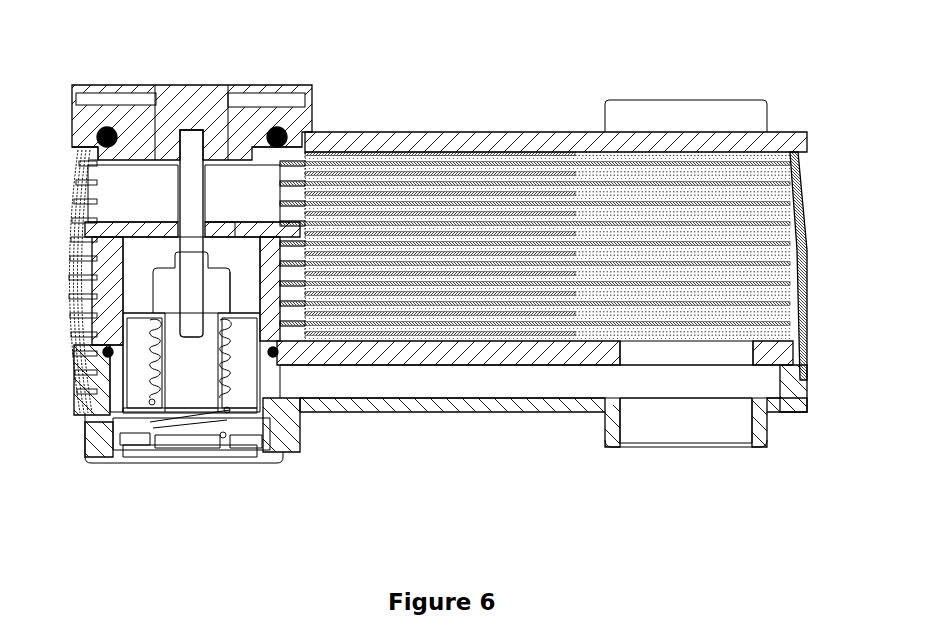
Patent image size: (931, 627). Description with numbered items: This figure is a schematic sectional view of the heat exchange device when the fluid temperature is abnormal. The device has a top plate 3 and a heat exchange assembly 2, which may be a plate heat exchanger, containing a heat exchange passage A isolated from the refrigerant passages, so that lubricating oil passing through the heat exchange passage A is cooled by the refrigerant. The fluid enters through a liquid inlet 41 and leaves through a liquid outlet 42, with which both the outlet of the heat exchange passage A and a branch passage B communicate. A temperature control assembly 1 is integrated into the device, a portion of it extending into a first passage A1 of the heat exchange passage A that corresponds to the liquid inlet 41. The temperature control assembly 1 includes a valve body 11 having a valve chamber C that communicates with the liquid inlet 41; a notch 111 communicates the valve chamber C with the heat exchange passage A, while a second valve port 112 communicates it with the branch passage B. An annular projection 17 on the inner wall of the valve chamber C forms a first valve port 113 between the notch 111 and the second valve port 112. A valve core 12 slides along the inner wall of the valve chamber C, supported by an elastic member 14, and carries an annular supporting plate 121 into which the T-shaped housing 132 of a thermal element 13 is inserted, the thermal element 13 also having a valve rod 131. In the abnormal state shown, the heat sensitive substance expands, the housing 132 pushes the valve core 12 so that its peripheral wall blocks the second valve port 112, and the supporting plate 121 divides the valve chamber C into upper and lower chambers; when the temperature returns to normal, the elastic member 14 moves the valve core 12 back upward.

The temperature control assembly 1 is at (258, 52).
The valve body 11 is at (188, 100).
The notch 111 is at (270, 181).
The second valve port 112 is at (280, 377).
The first valve port 113 is at (220, 210).
The valve core 12 is at (132, 338).
The supporting plate 121 is at (142, 312).
The thermal element 13 is at (170, 224).
The valve rod 131 is at (212, 206).
The housing 132 is at (242, 280).
The elastic member 14 is at (223, 335).
The annular projection 17 is at (113, 182).
The heat exchange assembly 2 is at (817, 270).
The top plate 3 is at (460, 133).
The liquid inlet 41 is at (194, 457).
The liquid outlet 42 is at (693, 428).
The heat exchange passage A is at (497, 173).
The first passage A1 is at (83, 156).
The branch passage B is at (530, 381).
The valve chamber C is at (241, 292).